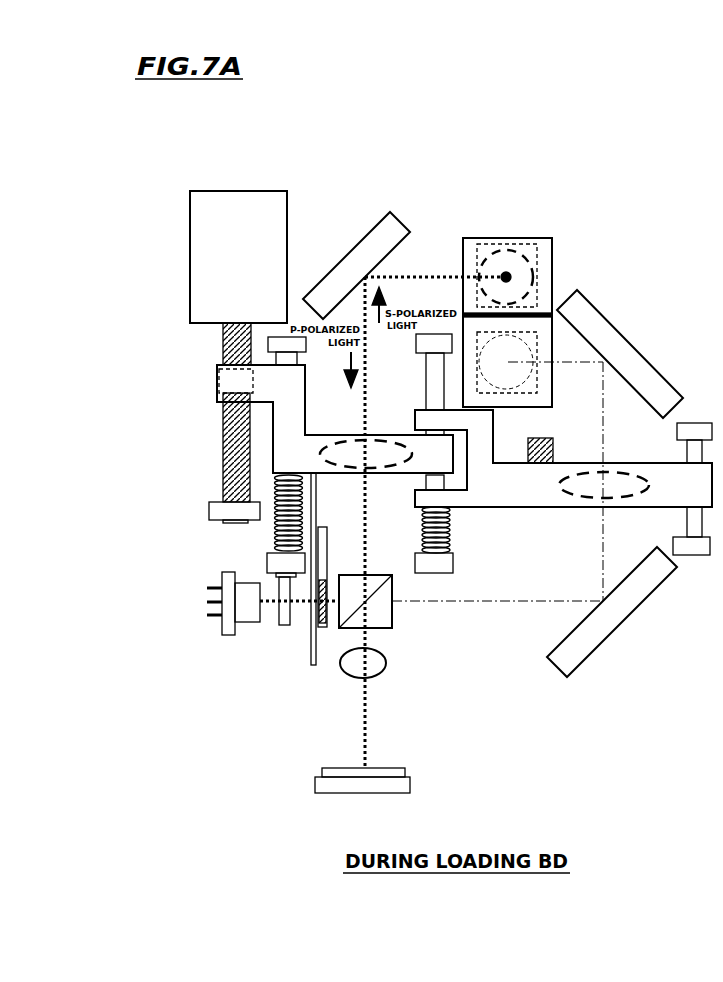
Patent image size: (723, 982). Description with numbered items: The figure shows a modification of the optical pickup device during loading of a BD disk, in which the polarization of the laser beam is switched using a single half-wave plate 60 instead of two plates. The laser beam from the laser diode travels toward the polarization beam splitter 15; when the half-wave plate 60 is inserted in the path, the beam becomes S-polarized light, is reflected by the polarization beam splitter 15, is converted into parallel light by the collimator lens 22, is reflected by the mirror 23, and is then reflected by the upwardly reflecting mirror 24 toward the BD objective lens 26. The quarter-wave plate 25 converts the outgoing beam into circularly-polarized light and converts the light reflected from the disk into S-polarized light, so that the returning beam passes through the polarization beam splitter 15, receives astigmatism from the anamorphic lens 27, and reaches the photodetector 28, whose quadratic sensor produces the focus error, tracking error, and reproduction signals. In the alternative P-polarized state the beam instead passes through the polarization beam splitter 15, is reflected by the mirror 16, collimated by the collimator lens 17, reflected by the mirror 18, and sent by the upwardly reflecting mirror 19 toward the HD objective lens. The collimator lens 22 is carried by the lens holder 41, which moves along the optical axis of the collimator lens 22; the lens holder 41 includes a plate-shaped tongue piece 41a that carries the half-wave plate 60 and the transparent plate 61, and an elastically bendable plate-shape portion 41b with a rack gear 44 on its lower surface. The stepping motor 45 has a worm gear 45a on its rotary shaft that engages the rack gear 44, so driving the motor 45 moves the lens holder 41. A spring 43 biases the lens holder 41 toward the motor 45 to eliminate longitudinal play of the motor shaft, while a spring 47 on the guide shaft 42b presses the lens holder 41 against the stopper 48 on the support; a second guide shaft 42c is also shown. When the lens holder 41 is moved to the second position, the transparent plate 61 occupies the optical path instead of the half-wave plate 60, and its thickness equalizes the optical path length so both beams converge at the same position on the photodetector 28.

The polarization beam splitter 15 is at (395, 632).
The mirror 16 is at (632, 603).
The collimator lens 17 is at (617, 495).
The mirror 18 is at (604, 335).
The upwardly reflecting mirror 19 is at (550, 378).
The collimator lens 22 is at (350, 442).
The mirror 23 is at (375, 236).
The upwardly reflecting mirror 24 is at (547, 278).
The quarter-wave plate 25 is at (492, 246).
The BD objective lens 26 is at (530, 240).
The anamorphic lens 27 is at (352, 672).
The photodetector 28 is at (395, 770).
The lens holder 41 is at (430, 458).
The tongue piece 41a is at (308, 672).
The plate-shape portion 41b is at (218, 420).
The guide shaft 42b is at (436, 390).
The adjustment screw 42c is at (690, 450).
The spring 43 is at (275, 528).
The rack gear 44 is at (222, 362).
The motor 45 is at (240, 196).
The worm gear 45a is at (222, 468).
The spring 47 is at (445, 530).
The stopper 48 is at (528, 450).
The half-wave plate 60 is at (310, 628).
The transparent plate 61 is at (323, 533).